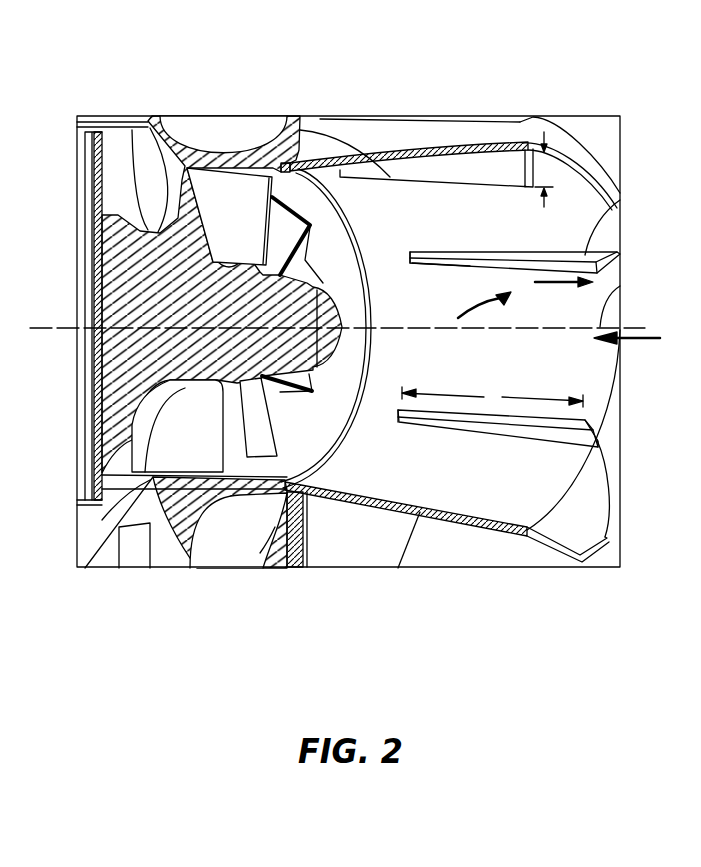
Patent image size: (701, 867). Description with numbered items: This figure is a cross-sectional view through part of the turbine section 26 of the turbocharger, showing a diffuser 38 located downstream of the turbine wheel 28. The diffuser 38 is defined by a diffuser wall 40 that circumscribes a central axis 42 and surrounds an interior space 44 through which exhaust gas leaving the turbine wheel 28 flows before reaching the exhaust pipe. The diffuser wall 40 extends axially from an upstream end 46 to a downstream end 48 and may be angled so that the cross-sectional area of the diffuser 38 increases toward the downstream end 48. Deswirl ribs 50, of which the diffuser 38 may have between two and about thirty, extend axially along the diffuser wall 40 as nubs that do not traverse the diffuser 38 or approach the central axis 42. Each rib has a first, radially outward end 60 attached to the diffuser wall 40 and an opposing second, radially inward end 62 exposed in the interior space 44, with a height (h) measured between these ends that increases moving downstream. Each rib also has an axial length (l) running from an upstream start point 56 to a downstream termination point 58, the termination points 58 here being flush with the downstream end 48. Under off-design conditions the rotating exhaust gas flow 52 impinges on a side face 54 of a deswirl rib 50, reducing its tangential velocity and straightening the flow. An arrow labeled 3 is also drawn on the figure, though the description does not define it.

The axial flow direction arrow 3 is at (648, 338).
The turbine section 26 is at (293, 98).
The turbine wheel 28 is at (168, 117).
The diffuser 38 is at (560, 183).
The diffuser wall 40 is at (488, 148).
The central axis 42 is at (600, 326).
The interior space 44 is at (447, 200).
The upstream end 46 is at (288, 567).
The downstream end 48 is at (612, 412).
The deswirl ribs 50 is at (585, 256).
The rotating exhaust gas flow 52 is at (490, 313).
The side face 54 is at (518, 257).
The upstream start point 56 is at (398, 411).
The downstream termination point 58 is at (596, 442).
The first, radially outward end 60 is at (470, 252).
The second, radially inward end 62 is at (451, 267).